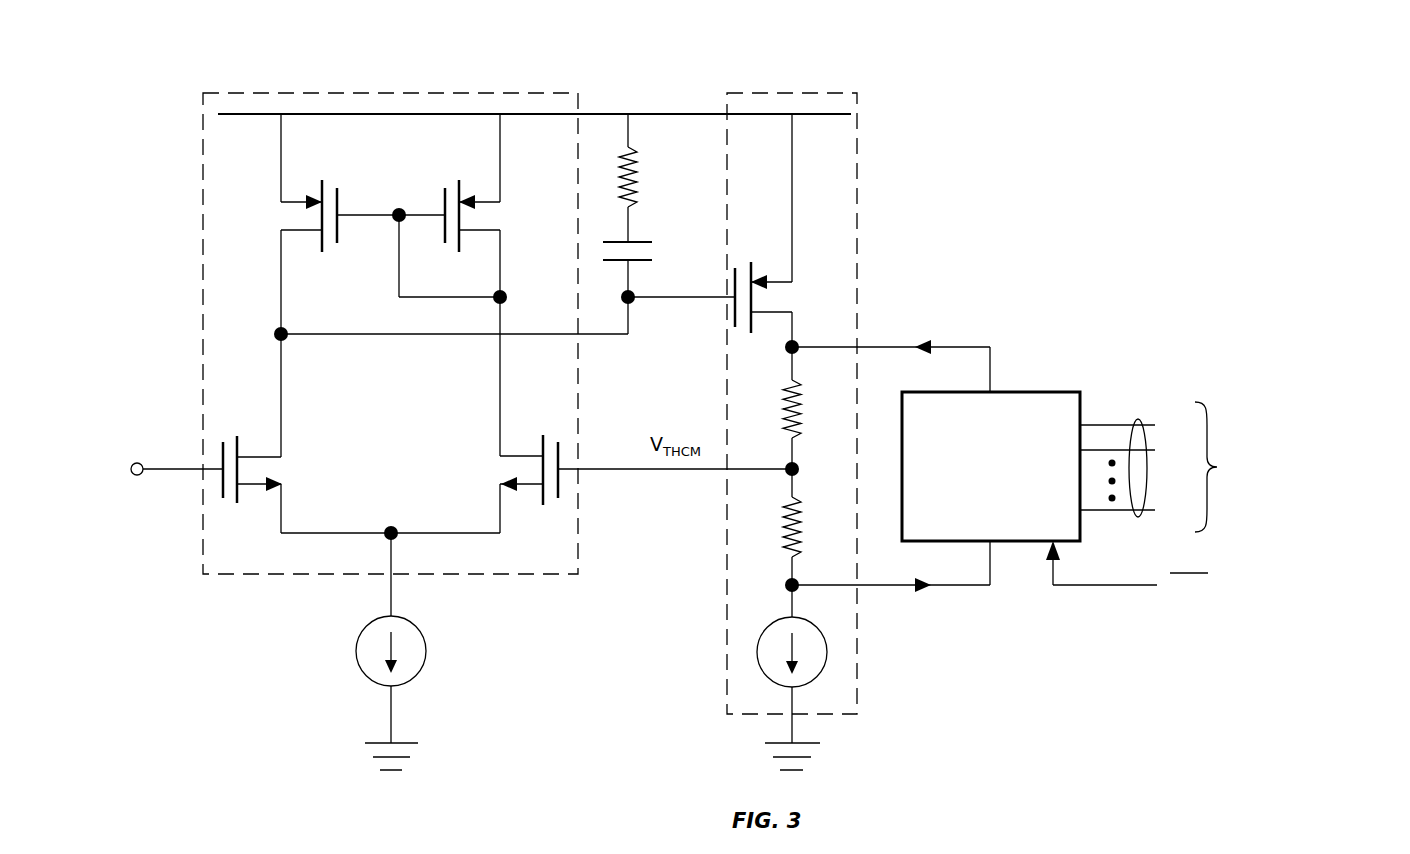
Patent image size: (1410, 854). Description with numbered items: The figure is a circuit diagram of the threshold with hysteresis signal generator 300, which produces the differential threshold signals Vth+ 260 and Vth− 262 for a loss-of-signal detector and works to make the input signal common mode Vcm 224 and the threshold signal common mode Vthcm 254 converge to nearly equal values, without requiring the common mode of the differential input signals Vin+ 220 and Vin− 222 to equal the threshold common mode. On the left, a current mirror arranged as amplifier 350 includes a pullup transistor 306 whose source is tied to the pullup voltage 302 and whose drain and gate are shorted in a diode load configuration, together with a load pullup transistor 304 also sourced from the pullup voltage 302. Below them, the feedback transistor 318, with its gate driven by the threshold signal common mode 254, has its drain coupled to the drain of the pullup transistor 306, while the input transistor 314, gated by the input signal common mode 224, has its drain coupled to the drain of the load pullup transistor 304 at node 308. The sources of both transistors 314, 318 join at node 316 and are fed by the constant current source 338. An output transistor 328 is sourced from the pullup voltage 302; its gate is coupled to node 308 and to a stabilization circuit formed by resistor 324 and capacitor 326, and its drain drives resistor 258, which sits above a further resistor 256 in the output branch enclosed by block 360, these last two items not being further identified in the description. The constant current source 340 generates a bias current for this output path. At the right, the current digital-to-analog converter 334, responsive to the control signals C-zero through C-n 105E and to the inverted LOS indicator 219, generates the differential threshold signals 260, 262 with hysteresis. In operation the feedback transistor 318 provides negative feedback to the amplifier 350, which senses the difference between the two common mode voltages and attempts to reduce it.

The threshold with hysteresis signal generator 300 is at (1313, 101).
The pullup voltage 302 is at (483, 114).
The amplifier 350 is at (357, 93).
The threshold voltage generator 360 is at (805, 93).
The load pullup transistor 304 is at (340, 202).
The pullup transistor 306 is at (443, 195).
The node 308 is at (281, 334).
The input signal common mode VCM 224 is at (137, 476).
The input transistor 314 is at (221, 490).
The feedback transistor 318 is at (560, 461).
The node 316 is at (391, 526).
The constant current source 338 is at (427, 651).
The resistor 324 is at (636, 178).
The capacitor 326 is at (651, 242).
The output transistor 328 is at (733, 283).
The differential threshold signal VTH+ 260 is at (785, 347).
The resistor 258 is at (785, 422).
The threshold signal common mode VTHCM 254 is at (785, 469).
The resistor 256 is at (785, 539).
The differential threshold signal VTH− 262 is at (785, 583).
The constant current source 340 is at (783, 617).
The differential input signal VIN+ 220 is at (990, 382).
The differential input signal VIN− 222 is at (957, 588).
The inverted LOS indicator 219 is at (1080, 588).
The current digital-to-analog converter (IDAC) 334 is at (991, 466).
The control signals C0-Cn 105E is at (1131, 420).